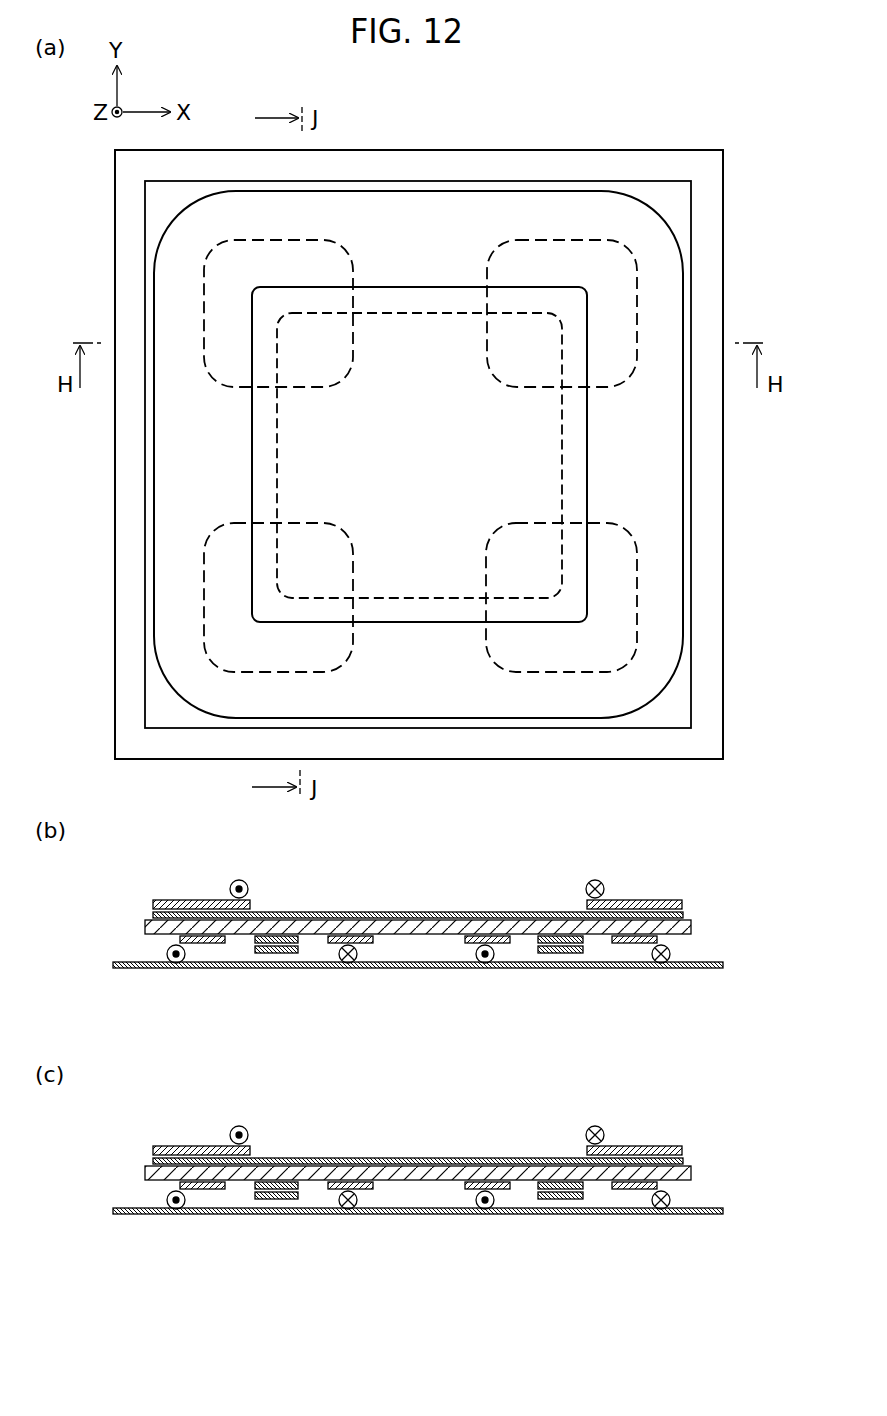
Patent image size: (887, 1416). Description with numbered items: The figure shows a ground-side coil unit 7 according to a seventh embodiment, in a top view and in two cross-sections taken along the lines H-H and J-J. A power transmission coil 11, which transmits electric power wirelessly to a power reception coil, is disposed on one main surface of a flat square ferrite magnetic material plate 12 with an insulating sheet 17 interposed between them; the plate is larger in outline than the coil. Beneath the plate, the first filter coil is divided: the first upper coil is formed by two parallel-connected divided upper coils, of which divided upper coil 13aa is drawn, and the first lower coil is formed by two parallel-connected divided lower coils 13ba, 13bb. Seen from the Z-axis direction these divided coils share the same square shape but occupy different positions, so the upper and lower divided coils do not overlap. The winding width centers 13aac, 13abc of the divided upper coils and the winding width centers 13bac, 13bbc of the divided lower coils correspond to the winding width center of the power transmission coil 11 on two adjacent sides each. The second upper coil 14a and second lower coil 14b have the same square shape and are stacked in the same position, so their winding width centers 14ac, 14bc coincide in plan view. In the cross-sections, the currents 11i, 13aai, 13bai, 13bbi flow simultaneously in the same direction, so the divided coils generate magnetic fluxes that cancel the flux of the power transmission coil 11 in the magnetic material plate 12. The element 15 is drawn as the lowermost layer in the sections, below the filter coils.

The ground-side coil unit 7 is at (640, 143).
The power transmission coil 11 is at (670, 600).
The current of the power transmission coil 11i is at (241, 880).
The magnetic material plate 12 is at (690, 655).
The divided upper coil 13aa is at (336, 936).
The current of the divided upper coil 13aai is at (176, 964).
The divided lower coil 13ba is at (491, 936).
The current of the divided lower coil 13bai is at (486, 964).
The divided lower coil 13bb is at (491, 1182).
The current of the divided lower coil 13bbi is at (486, 1210).
The winding width center of the divided upper coil 13aac is at (250, 240).
The winding width center of the divided lower coil 13bac is at (510, 240).
The winding width center of the divided lower coil 13bbc is at (263, 672).
The winding width center of the divided upper coil 13abc is at (502, 672).
The second upper coil 14a is at (281, 936).
The second lower coil 14b is at (273, 954).
The winding width center of the second upper coil 14ac is at (402, 599).
The winding width center of the second lower coil 14bc is at (419, 455).
The base substrate 15 is at (720, 705).
The insulating sheet 17 is at (433, 912).